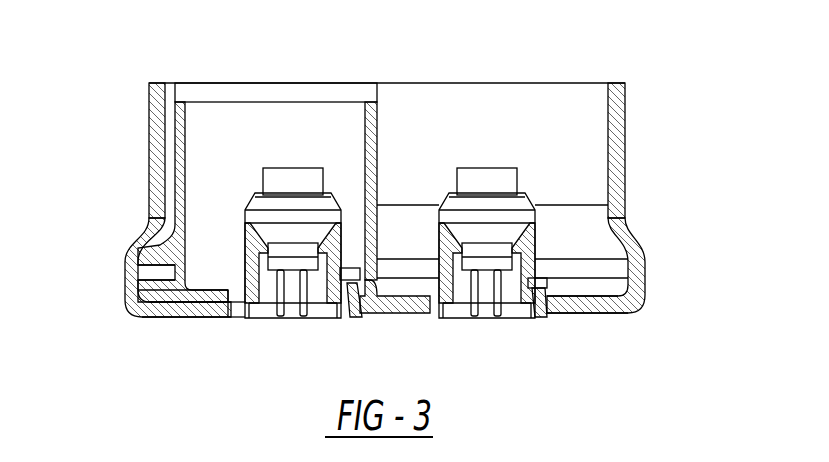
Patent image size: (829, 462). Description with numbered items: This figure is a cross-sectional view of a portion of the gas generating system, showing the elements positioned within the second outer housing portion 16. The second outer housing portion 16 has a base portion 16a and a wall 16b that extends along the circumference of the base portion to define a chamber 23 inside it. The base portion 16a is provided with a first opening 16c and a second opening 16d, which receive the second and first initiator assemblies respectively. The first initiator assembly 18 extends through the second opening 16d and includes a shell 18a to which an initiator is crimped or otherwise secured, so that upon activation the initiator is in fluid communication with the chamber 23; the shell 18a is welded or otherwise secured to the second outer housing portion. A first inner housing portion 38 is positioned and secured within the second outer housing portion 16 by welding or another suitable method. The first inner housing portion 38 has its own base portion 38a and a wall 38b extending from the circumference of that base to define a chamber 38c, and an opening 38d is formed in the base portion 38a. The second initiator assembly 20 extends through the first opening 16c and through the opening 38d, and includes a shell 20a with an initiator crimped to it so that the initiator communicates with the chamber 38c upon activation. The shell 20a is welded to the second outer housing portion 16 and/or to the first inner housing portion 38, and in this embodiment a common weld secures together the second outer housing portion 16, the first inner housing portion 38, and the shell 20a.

The second outer housing portion 16 is at (643, 240).
The base portion 16a is at (598, 307).
The wall 16b is at (625, 145).
The first opening 16c is at (233, 318).
The second opening 16d is at (542, 312).
The first initiator assembly 18 is at (513, 295).
The shell 18a is at (518, 232).
The second initiator assembly 20 is at (322, 297).
The shell 20a is at (255, 243).
The chamber 23 is at (512, 129).
The first inner housing portion 38 is at (172, 223).
The base portion 38a is at (230, 311).
The wall 38b is at (185, 144).
The chamber 38c is at (255, 131).
The opening 38d is at (233, 318).